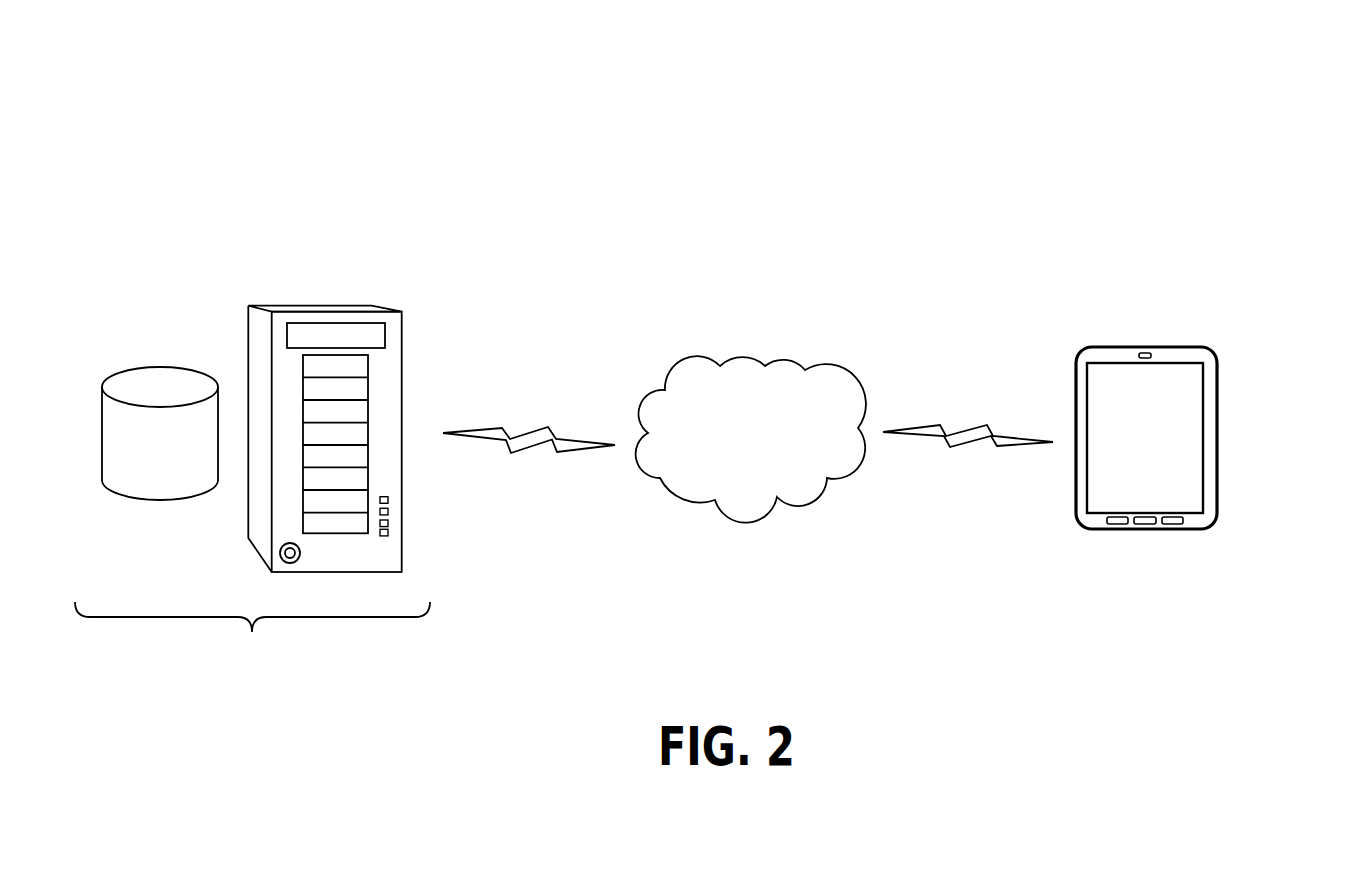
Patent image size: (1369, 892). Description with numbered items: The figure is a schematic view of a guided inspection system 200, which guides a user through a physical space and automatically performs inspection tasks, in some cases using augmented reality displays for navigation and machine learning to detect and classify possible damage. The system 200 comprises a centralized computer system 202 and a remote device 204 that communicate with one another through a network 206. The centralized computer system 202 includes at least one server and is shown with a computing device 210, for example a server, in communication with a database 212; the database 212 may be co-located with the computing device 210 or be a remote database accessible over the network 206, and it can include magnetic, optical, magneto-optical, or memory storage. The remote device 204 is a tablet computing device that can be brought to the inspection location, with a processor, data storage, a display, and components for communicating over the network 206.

The guided inspection system 200 is at (597, 187).
The centralized computer system 202 is at (252, 634).
The remote device 204 is at (1212, 437).
The network 206 is at (745, 357).
The computing device 210 is at (402, 368).
The database 212 is at (159, 498).